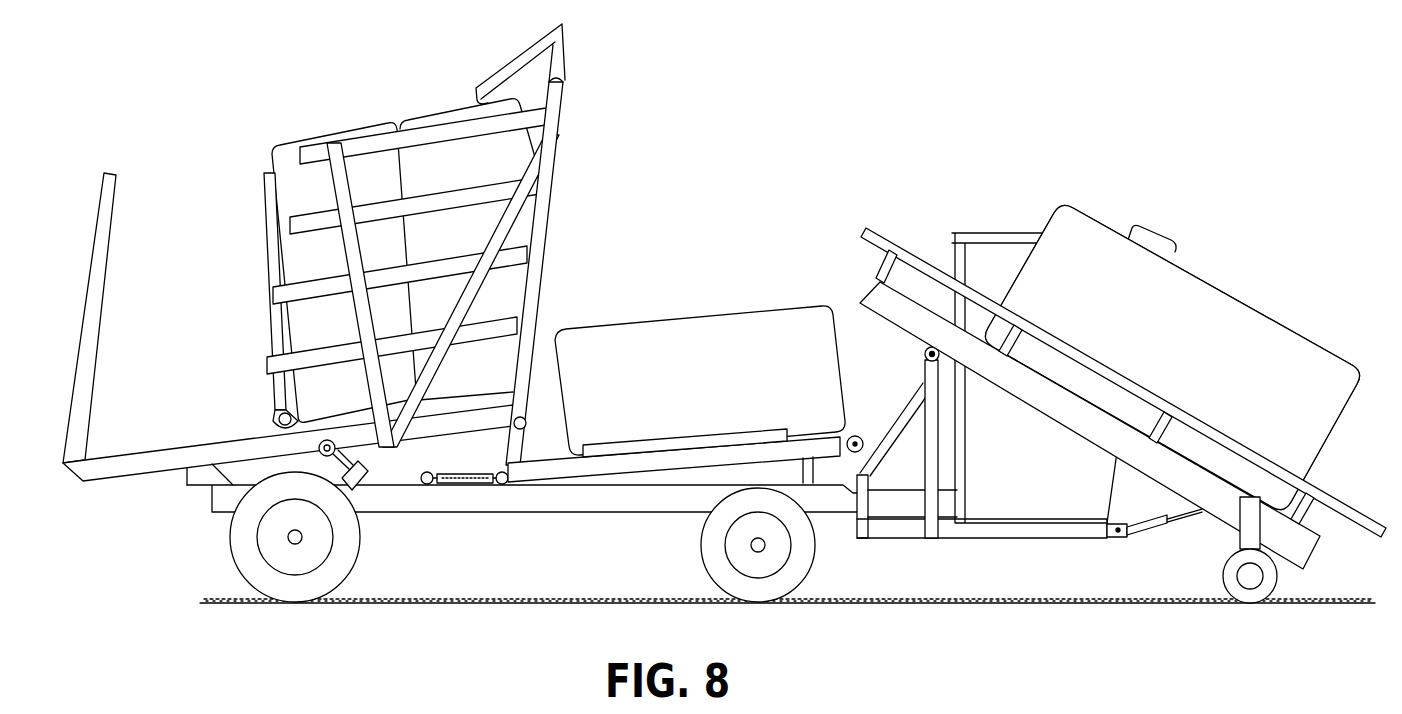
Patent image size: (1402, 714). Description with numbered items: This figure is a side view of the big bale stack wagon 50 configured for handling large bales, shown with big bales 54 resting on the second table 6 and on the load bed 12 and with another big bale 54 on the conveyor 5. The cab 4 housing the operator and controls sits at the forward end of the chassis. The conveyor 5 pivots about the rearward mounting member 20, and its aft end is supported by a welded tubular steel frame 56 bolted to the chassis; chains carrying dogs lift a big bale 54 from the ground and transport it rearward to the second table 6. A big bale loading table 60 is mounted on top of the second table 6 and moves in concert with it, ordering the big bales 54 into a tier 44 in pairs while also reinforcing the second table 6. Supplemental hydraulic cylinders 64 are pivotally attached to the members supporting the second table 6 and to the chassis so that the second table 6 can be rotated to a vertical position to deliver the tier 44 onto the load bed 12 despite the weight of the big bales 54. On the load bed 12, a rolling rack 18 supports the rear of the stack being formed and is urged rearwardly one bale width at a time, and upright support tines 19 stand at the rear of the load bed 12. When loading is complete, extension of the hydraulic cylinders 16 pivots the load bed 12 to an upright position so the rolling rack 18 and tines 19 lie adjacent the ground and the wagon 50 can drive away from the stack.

The cab 4 is at (985, 232).
The conveyor 5 is at (895, 236).
The second table 6 is at (582, 476).
The load bed 12 is at (367, 430).
The hydraulic cylinders 16 is at (362, 478).
The rolling rack 18 is at (272, 262).
The upright support tines 19 is at (80, 417).
The rearward mounting member 20 is at (921, 352).
The tier 44 is at (312, 135).
The big bale stack wagon 50 is at (750, 127).
The big bales 54 is at (690, 305).
The welded tubular steel frame 56 is at (905, 538).
The big bale loading table 60 is at (810, 427).
The supplemental hydraulic cylinders 64 is at (452, 484).